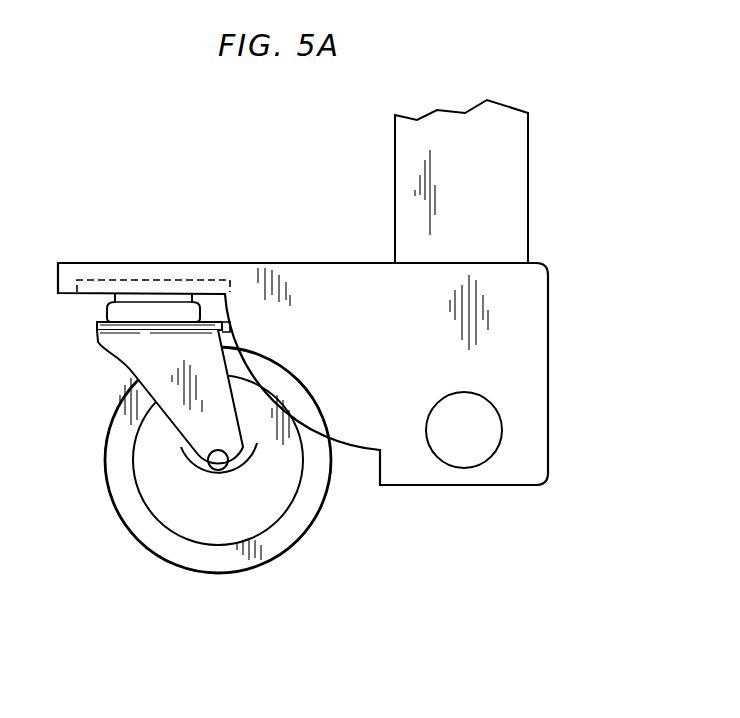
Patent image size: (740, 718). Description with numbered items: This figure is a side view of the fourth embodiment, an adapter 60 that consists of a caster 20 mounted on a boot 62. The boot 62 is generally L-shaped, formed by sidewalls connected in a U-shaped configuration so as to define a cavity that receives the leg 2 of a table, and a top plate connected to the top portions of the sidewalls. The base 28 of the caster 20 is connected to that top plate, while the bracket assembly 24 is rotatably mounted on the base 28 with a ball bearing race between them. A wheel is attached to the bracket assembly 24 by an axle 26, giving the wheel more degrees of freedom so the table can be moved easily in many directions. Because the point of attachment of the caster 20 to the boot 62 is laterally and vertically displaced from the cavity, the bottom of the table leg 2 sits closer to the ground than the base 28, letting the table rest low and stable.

The leg 2 is at (516, 198).
The adapter 60 is at (557, 264).
The boot 62 is at (373, 262).
The base 28 is at (111, 298).
The bracket assembly 24 is at (138, 348).
The caster 20 is at (290, 533).
The axle 26 is at (218, 460).